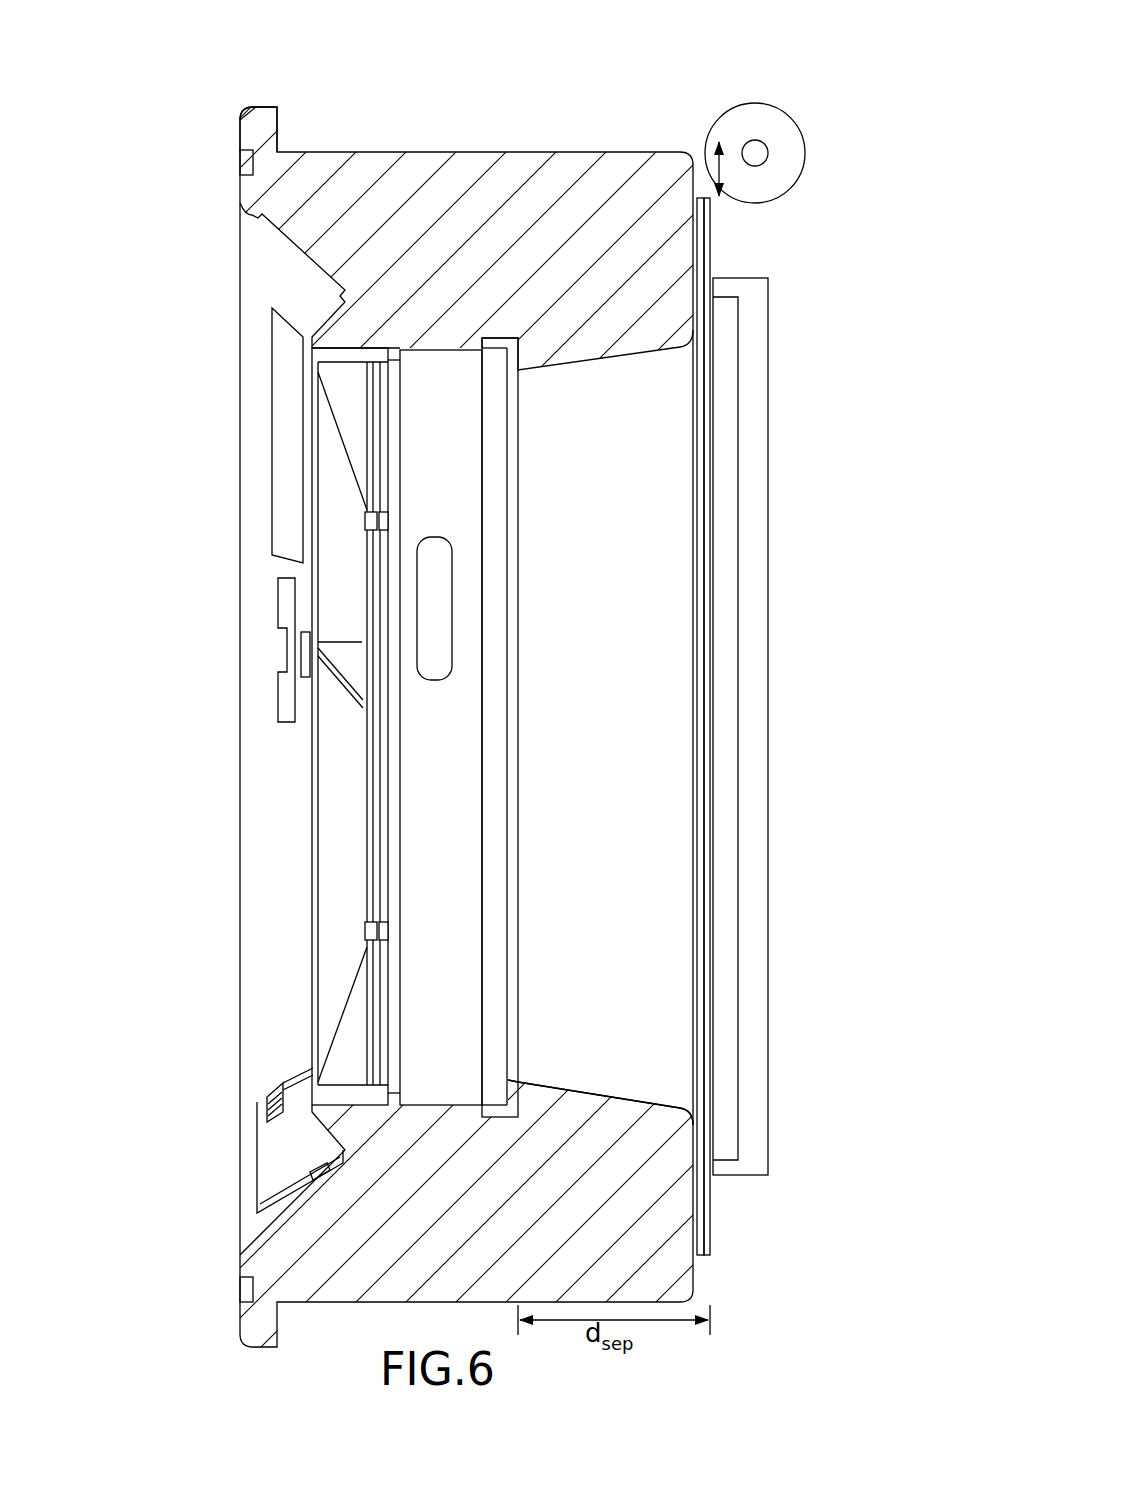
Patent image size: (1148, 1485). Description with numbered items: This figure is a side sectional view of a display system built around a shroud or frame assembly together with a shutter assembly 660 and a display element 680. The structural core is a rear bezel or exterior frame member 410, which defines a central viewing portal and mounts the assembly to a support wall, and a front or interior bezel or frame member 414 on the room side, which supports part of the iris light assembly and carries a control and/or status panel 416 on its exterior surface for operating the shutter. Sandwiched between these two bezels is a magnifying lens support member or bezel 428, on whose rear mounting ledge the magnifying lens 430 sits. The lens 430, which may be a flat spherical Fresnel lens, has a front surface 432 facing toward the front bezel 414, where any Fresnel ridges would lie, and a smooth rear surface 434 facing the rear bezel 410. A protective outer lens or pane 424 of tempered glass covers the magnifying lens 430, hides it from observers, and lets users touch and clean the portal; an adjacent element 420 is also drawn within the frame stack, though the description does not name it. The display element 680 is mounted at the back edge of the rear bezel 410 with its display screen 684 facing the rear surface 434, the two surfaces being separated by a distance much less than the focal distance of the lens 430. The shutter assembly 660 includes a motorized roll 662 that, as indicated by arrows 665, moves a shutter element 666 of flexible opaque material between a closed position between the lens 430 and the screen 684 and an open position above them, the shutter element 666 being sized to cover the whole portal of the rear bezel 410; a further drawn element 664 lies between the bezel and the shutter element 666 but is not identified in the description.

The rear bezel or exterior frame member 410 is at (607, 128).
The front or interior bezel or frame member 414 is at (239, 102).
The control and/or status panel 416 is at (273, 1076).
The image sensor assembly 420 is at (332, 412).
The protective outer lens or pane 424 is at (358, 752).
The magnifying lens support member or bezel 428 is at (437, 322).
The magnifying lens 430 is at (524, 1107).
The front surface of magnifying lens 432 is at (507, 1057).
The rear surface of magnifying lens 434 is at (522, 1032).
The shutter assembly 660 is at (788, 643).
The motorized roll 662 is at (806, 158).
The adhesive layer 664 is at (695, 164).
The arrows 665 is at (720, 140).
The shutter element 666 is at (712, 237).
The display element 680 is at (822, 726).
The display screen/surface 684 is at (713, 1022).